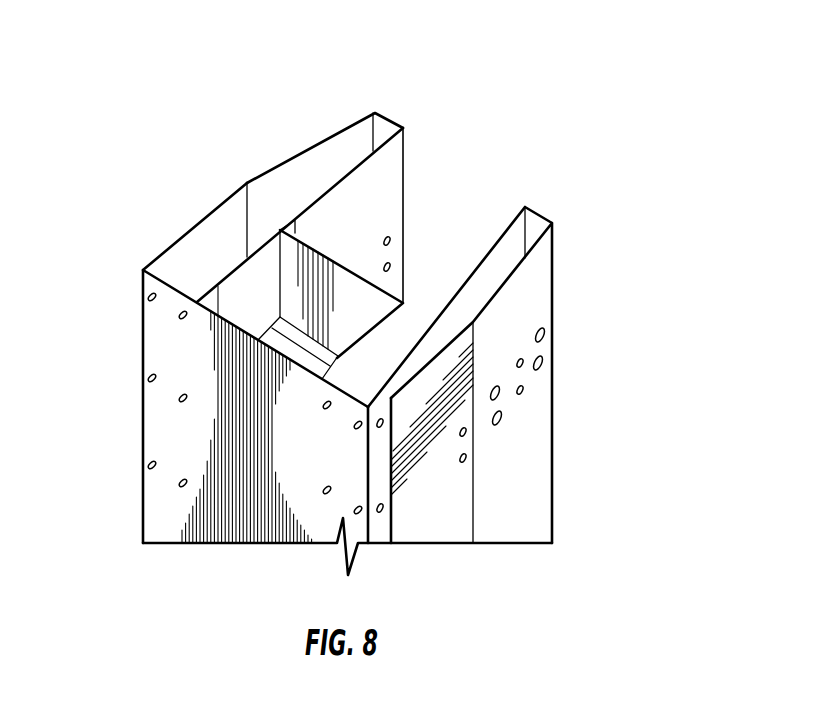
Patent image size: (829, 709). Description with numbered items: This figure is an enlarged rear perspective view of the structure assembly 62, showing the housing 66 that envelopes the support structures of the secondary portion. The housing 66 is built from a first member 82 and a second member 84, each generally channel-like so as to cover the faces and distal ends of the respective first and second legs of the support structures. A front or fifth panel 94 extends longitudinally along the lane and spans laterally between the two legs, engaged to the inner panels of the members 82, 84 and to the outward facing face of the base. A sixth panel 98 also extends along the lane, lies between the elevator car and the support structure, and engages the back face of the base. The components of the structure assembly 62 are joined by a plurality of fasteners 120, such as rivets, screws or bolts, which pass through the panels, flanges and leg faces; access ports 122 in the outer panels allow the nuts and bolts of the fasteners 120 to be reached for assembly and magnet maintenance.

The structure assembly 62 is at (531, 144).
The housing 66 is at (195, 214).
The first member 82 is at (560, 288).
The second member 84 is at (302, 142).
The fifth panel 94 is at (339, 262).
The sixth panel 98 is at (177, 508).
The fasteners 120 is at (150, 384).
The access ports 122 is at (549, 357).